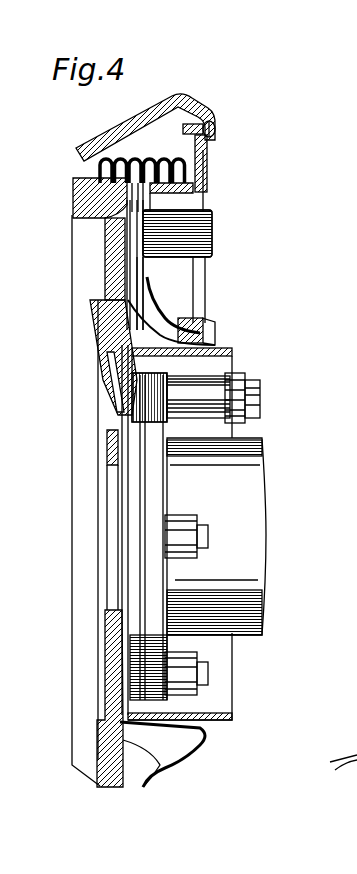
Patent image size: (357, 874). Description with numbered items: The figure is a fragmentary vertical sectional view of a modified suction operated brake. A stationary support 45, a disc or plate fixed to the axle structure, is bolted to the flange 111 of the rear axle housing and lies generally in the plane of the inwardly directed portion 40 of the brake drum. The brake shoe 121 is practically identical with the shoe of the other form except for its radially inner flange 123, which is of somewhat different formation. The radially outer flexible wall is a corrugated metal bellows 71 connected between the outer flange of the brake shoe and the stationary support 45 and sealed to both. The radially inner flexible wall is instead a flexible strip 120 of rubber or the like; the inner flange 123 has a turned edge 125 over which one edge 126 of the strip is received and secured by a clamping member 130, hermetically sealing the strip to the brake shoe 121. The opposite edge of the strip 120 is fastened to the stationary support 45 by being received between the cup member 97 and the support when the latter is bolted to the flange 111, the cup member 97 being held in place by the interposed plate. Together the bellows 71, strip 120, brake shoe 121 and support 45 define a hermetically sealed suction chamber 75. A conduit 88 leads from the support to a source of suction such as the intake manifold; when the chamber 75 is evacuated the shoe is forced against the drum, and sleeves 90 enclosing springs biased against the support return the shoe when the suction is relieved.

The inwardly directed portion of the brake drum 40 is at (157, 473).
The stationary support 45 is at (110, 245).
The bellows 71 is at (165, 162).
The suction chamber 75 is at (117, 275).
The conduit 88 is at (250, 377).
The sleeve 90 is at (212, 232).
The cup member 97 is at (220, 348).
The flange of the rear axle housing 111 is at (155, 482).
The flexible strip 120 is at (178, 355).
The brake shoe 121 is at (205, 308).
The radially inner flange 123 is at (147, 300).
The turned edge 125 is at (210, 318).
The edge of the rubber strip 126 is at (193, 317).
The clamping member 130 is at (200, 330).